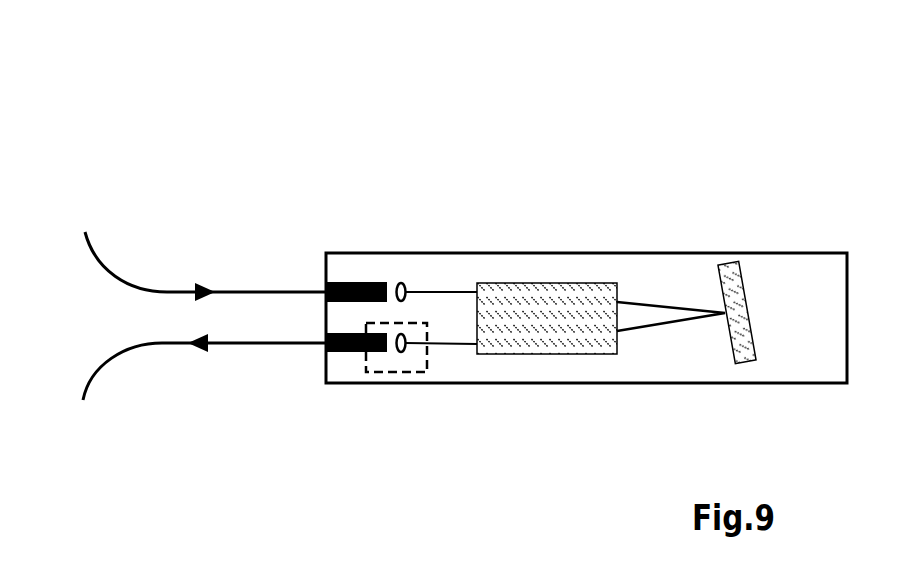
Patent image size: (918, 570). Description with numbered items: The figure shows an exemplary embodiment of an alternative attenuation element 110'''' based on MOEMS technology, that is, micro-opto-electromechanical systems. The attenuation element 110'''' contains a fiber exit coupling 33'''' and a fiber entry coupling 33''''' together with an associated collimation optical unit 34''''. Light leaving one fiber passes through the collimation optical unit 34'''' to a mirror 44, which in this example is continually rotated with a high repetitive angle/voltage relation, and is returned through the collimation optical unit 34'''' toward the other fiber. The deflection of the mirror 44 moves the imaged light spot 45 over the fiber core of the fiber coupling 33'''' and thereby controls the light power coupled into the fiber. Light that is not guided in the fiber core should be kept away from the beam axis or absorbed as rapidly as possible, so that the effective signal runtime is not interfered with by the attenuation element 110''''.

The attenuation element 110'''' is at (461, 207).
The fiber exit coupling 33'''' is at (432, 172).
The fiber entry coupling 33''''' is at (267, 410).
The imaged light spot 45 is at (401, 334).
The collimation optical unit 34'''' is at (596, 253).
The mirror 44 is at (732, 278).